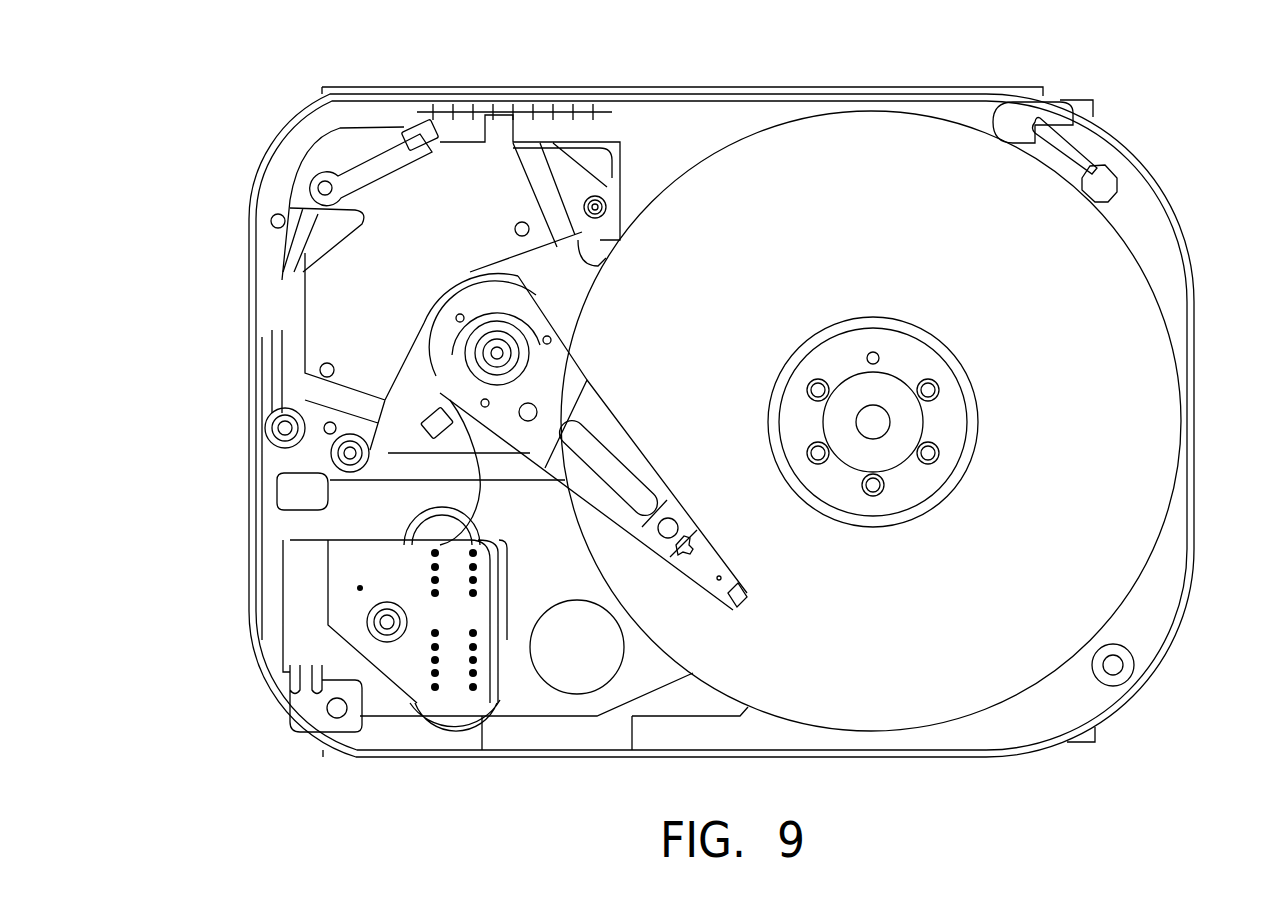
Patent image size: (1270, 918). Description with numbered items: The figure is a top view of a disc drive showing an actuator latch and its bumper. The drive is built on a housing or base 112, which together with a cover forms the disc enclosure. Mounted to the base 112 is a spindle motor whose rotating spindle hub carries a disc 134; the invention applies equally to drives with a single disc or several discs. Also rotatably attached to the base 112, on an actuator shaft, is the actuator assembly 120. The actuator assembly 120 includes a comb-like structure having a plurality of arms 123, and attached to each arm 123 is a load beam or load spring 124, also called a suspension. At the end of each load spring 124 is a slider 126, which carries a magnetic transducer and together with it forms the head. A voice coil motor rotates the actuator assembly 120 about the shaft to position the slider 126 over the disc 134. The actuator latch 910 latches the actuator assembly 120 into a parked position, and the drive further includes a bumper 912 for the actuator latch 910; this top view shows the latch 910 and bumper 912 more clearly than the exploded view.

The base 112 is at (1093, 703).
The disc 134 is at (1128, 288).
The arm 123 is at (875, 426).
The actuator assembly 120 is at (603, 506).
The load spring 124 is at (695, 575).
The slider 126 is at (742, 607).
The actuator latch 910 is at (306, 210).
The bumper 912 is at (410, 128).